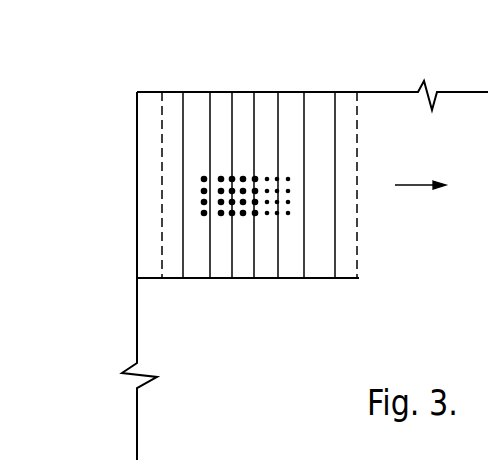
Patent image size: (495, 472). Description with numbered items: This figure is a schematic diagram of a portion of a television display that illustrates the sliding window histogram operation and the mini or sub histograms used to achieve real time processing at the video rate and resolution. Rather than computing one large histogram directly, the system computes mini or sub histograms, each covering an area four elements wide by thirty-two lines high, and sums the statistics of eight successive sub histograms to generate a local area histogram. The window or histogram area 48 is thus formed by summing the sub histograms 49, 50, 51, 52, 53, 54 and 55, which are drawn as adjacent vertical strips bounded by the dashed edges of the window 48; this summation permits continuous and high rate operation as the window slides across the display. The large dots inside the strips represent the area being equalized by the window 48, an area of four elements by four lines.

The window or histogram area 48 is at (346, 98).
The sub histogram 49 is at (156, 101).
The sub histogram 50 is at (168, 267).
The sub histogram 51 is at (203, 106).
The sub histogram 52 is at (218, 267).
The sub histogram 53 is at (275, 105).
The sub histogram 54 is at (288, 267).
The sub histogram 55 is at (323, 106).